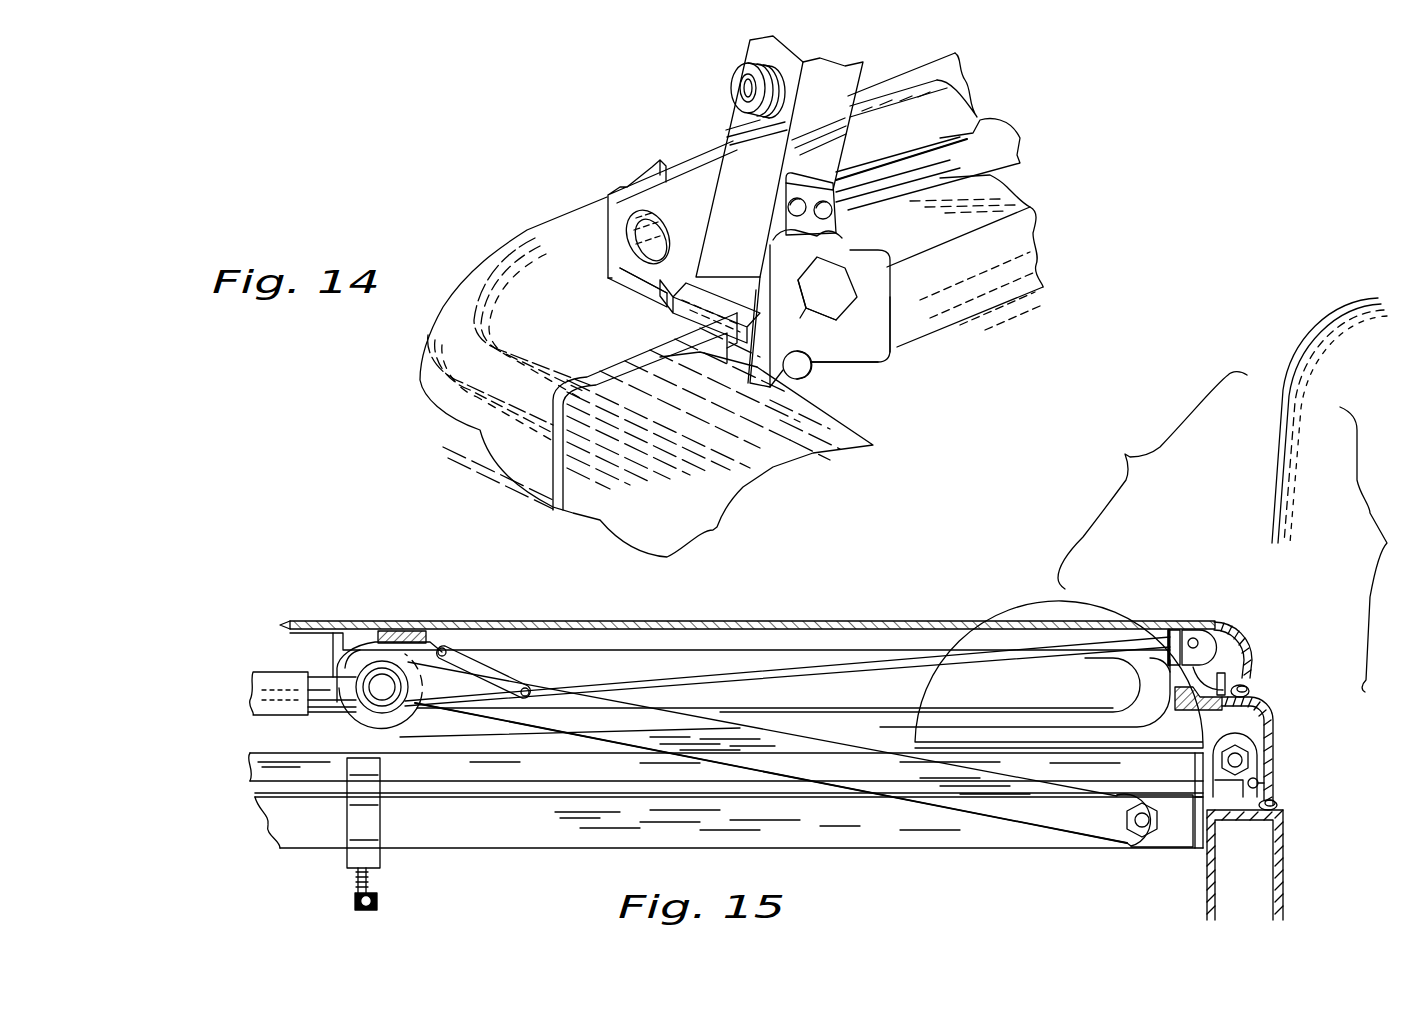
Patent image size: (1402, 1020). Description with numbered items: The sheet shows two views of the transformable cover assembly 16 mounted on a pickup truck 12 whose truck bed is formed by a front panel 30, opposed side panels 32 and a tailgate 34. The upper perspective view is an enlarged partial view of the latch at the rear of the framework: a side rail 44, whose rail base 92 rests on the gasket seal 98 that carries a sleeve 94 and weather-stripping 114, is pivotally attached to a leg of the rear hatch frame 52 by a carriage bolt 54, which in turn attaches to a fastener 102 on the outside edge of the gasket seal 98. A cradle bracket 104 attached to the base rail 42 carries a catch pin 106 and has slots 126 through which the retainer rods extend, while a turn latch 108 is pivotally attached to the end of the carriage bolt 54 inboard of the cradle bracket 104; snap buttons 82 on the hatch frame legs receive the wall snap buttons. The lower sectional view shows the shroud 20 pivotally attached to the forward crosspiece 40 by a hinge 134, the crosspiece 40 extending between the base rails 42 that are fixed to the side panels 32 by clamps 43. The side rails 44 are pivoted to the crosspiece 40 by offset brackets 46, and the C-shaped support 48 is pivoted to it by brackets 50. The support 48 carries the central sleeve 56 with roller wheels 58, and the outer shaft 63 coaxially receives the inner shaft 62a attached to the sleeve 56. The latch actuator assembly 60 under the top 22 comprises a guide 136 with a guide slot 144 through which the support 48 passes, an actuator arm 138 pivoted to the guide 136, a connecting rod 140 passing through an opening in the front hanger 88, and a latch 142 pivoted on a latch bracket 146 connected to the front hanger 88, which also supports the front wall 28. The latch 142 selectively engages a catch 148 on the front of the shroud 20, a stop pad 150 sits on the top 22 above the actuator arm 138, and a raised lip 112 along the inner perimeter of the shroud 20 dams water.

In FIG. 15, the pickup truck 12 is at (1270, 477).
In FIG. 15, the cover assembly 16 is at (788, 600).
In FIG. 15, the shroud 20 is at (1278, 708).
In FIG. 15, the top 22 is at (875, 619).
In FIG. 15, the front wall 28 is at (1162, 712).
In FIG. 15, the front panel 30 is at (1288, 890).
In FIG. 14, the side panels 32 is at (532, 223).
In FIG. 14, the tailgate 34 is at (678, 533).
In FIG. 15, the crosspiece 40 is at (1200, 835).
In FIG. 14, the base rails 42 is at (682, 300).
In FIG. 15, the base rails 42 is at (893, 830).
In FIG. 15, the clamps 43 is at (380, 868).
In FIG. 14, the side rails 44 is at (683, 128).
In FIG. 15, the side rails 44 is at (425, 775).
In FIG. 15, the offset brackets 46 is at (1250, 740).
In FIG. 15, the support 48 is at (1075, 815).
In FIG. 15, the brackets 50 is at (1175, 830).
In FIG. 14, the rear hatch frame 52 is at (842, 143).
In FIG. 14, the carriage bolts 54 is at (862, 307).
In FIG. 15, the sleeve 56 is at (363, 655).
In FIG. 15, the roller wheels 58 is at (428, 640).
In FIG. 15, the latch actuator assembly 60 is at (410, 602).
In FIG. 15, the inner shaft 62a is at (330, 703).
In FIG. 15, the outer shaft 63 is at (283, 672).
In FIG. 14, the snap buttons 82 is at (731, 72).
In FIG. 15, the front hanger 88 is at (1175, 632).
In FIG. 14, the rail base 92 is at (620, 192).
In FIG. 14, the sleeve 94 is at (632, 241).
In FIG. 14, the gasket seal 98 is at (645, 275).
In FIG. 14, the fastener 102 is at (645, 160).
In FIG. 14, the cradle bracket 104 is at (900, 362).
In FIG. 14, the catch pin 106 is at (812, 368).
In FIG. 14, the turn latch 108 is at (750, 372).
In FIG. 15, the raised lip 112 is at (1160, 690).
In FIG. 15, the weather-stripping 114 is at (1250, 690).
In FIG. 14, the slots 126 is at (860, 255).
In FIG. 15, the hinge 134 is at (1262, 783).
In FIG. 15, the guide 136 is at (475, 720).
In FIG. 15, the actuator arm 138 is at (498, 650).
In FIG. 15, the connecting rod 140 is at (950, 668).
In FIG. 15, the latch 142 is at (1200, 628).
In FIG. 15, the guide slot 144 is at (880, 697).
In FIG. 15, the latch bracket 146 is at (1225, 623).
In FIG. 15, the catch 148 is at (1240, 668).
In FIG. 15, the stop pad 150 is at (392, 630).